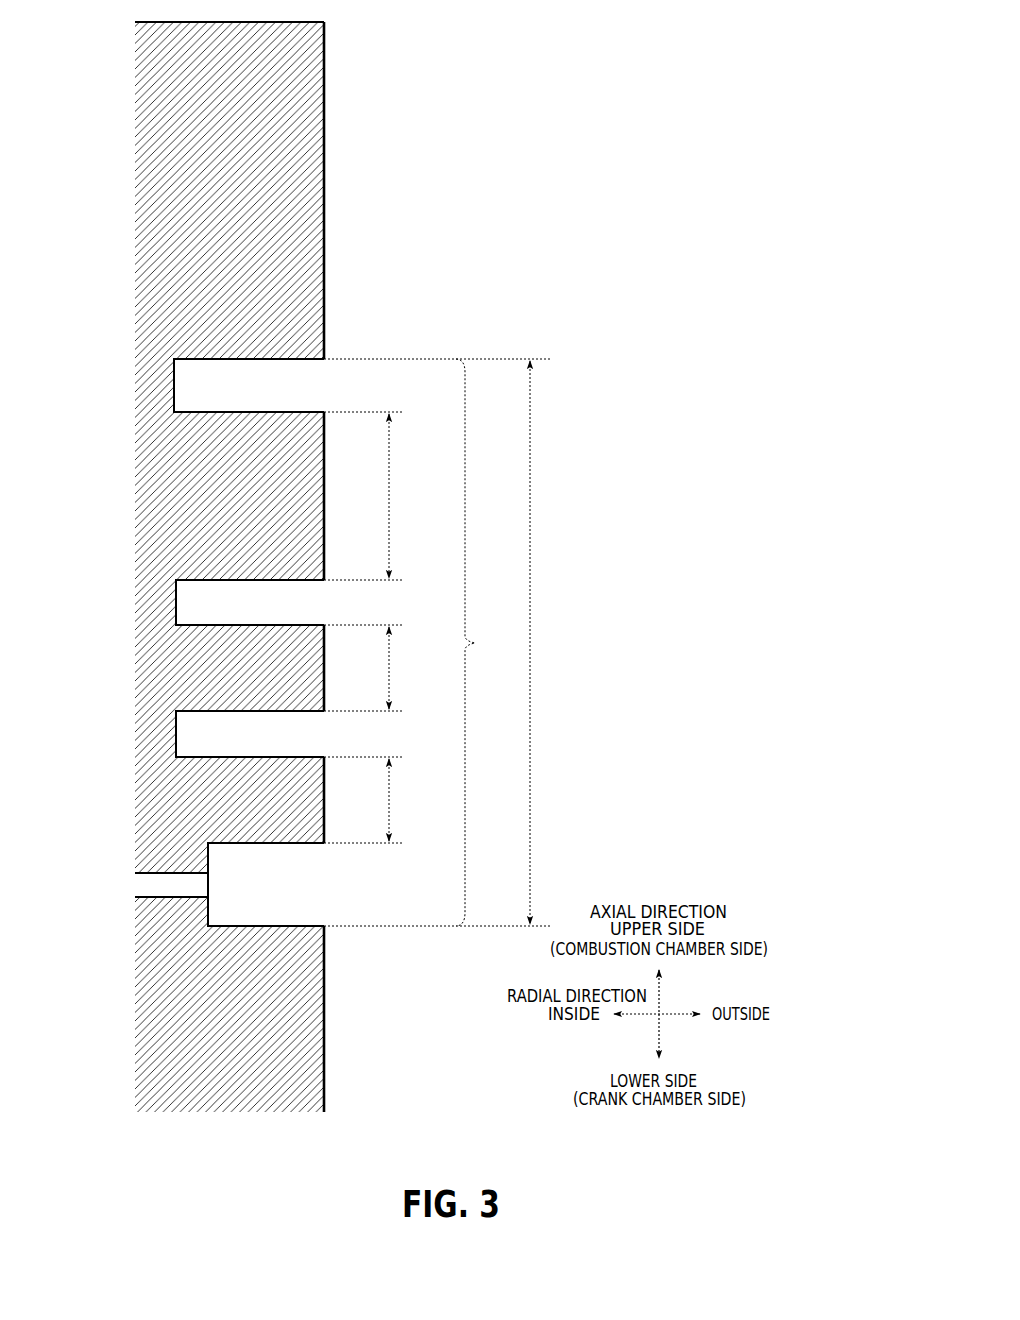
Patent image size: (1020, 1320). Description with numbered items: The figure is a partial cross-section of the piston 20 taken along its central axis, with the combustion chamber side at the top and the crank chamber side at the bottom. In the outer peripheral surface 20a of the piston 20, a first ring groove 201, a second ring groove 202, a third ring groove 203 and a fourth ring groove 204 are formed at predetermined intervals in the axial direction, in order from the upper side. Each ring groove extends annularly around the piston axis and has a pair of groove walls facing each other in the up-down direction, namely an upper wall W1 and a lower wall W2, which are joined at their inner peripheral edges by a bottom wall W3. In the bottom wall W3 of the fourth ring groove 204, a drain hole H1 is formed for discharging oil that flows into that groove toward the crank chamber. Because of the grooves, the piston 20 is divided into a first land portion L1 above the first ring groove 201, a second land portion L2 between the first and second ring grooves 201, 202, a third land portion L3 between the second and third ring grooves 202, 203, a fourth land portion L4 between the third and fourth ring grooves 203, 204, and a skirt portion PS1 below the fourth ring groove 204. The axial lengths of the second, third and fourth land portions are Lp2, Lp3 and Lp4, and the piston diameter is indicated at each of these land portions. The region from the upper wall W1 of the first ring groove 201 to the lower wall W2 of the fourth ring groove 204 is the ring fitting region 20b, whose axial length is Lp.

The piston 20 is at (233, 208).
The outer peripheral surface 20a is at (326, 170).
The ring fitting region 20b is at (487, 642).
The first ring groove 201 is at (326, 386).
The second ring groove 202 is at (326, 603).
The third ring groove 203 is at (326, 735).
The fourth ring groove 204 is at (324, 886).
The drain hole H1 is at (150, 873).
The first land portion L1 is at (332, 291).
The second land portion L2 is at (333, 484).
The third land portion L3 is at (333, 653).
The fourth land portion L4 is at (333, 785).
The axial length of ring fitting region Lp is at (545, 642).
The axial length of second land portion Lp2 is at (412, 496).
The axial length of third land portion Lp3 is at (412, 668).
The axial length of fourth land portion Lp4 is at (412, 800).
The skirt portion PS1 is at (332, 993).
The upper wall W1 is at (229, 353).
The lower wall W2 is at (229, 417).
The bottom wall W3 is at (176, 395).